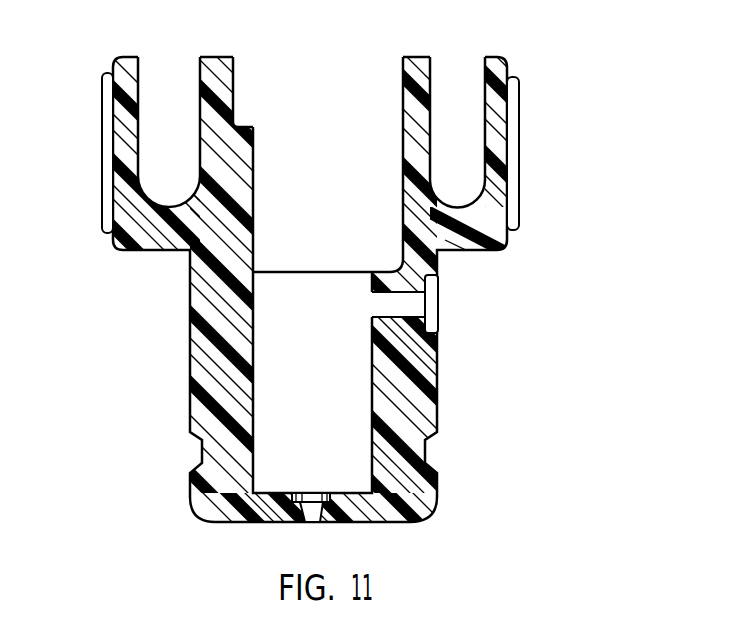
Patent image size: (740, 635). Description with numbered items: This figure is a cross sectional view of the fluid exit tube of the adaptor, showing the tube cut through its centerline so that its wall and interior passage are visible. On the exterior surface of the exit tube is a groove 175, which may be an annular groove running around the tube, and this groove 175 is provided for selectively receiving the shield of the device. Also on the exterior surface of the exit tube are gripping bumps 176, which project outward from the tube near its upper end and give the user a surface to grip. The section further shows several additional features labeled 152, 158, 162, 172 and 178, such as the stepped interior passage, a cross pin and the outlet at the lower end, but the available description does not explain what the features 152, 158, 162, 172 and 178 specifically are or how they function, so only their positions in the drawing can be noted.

The pin 152 is at (432, 312).
The shoulder of bore 158 is at (245, 123).
The nozzle orifice 162 is at (313, 515).
The nozzle insert 172 is at (325, 495).
The groove 175 is at (202, 450).
The gripping bumps 176 is at (520, 157).
The bore chamber 178 is at (390, 268).